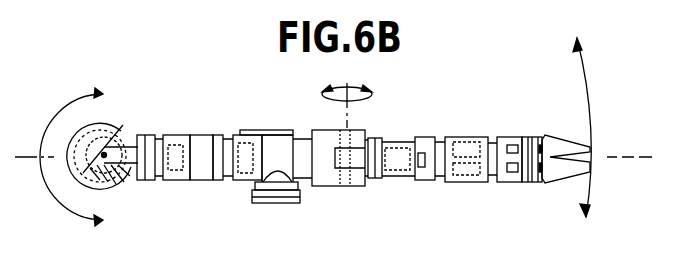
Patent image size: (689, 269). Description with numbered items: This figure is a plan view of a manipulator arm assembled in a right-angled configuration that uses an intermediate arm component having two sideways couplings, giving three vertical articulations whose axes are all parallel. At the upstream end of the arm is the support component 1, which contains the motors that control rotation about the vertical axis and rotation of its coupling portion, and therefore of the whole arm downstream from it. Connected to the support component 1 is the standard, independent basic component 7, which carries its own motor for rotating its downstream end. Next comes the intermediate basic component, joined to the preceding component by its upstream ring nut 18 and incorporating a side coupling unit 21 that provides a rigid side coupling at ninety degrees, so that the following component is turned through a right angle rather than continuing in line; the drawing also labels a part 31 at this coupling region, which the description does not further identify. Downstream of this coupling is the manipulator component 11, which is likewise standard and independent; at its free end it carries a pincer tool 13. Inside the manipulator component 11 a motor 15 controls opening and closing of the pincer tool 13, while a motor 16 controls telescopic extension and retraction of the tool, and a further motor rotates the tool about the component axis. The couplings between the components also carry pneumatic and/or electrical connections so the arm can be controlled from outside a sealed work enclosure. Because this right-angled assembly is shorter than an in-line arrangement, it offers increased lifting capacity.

The support component 1 is at (112, 112).
The basic component 7 is at (201, 130).
The tee coupling 31 is at (301, 131).
The side coupling unit 21 is at (248, 185).
The upstream ring nut 18 is at (300, 194).
The manipulator component 11 is at (450, 131).
The motor 15 is at (477, 141).
The motor 16 is at (471, 179).
The pincer tool 13 is at (563, 137).